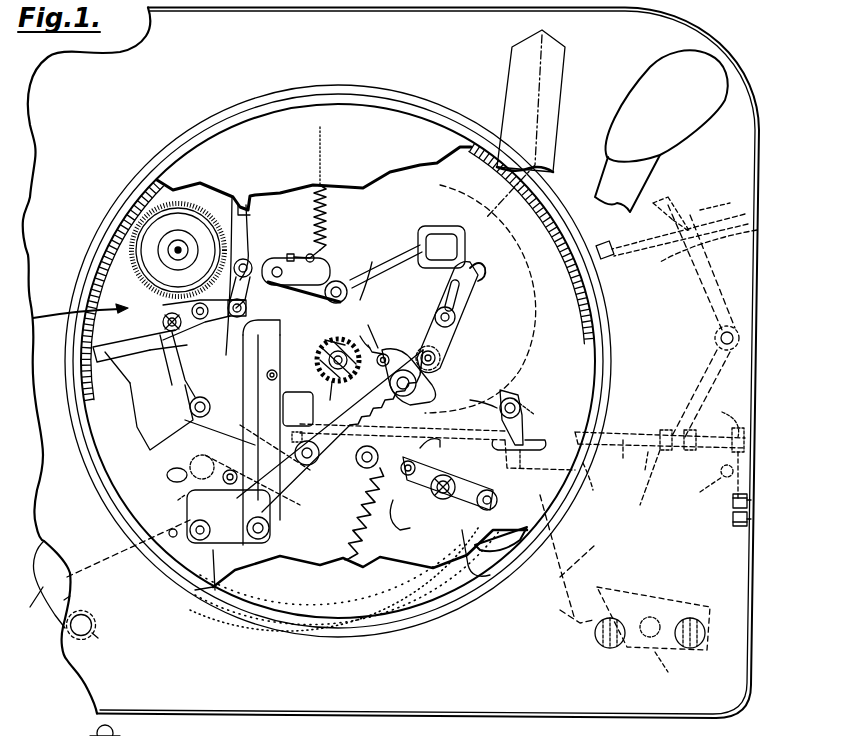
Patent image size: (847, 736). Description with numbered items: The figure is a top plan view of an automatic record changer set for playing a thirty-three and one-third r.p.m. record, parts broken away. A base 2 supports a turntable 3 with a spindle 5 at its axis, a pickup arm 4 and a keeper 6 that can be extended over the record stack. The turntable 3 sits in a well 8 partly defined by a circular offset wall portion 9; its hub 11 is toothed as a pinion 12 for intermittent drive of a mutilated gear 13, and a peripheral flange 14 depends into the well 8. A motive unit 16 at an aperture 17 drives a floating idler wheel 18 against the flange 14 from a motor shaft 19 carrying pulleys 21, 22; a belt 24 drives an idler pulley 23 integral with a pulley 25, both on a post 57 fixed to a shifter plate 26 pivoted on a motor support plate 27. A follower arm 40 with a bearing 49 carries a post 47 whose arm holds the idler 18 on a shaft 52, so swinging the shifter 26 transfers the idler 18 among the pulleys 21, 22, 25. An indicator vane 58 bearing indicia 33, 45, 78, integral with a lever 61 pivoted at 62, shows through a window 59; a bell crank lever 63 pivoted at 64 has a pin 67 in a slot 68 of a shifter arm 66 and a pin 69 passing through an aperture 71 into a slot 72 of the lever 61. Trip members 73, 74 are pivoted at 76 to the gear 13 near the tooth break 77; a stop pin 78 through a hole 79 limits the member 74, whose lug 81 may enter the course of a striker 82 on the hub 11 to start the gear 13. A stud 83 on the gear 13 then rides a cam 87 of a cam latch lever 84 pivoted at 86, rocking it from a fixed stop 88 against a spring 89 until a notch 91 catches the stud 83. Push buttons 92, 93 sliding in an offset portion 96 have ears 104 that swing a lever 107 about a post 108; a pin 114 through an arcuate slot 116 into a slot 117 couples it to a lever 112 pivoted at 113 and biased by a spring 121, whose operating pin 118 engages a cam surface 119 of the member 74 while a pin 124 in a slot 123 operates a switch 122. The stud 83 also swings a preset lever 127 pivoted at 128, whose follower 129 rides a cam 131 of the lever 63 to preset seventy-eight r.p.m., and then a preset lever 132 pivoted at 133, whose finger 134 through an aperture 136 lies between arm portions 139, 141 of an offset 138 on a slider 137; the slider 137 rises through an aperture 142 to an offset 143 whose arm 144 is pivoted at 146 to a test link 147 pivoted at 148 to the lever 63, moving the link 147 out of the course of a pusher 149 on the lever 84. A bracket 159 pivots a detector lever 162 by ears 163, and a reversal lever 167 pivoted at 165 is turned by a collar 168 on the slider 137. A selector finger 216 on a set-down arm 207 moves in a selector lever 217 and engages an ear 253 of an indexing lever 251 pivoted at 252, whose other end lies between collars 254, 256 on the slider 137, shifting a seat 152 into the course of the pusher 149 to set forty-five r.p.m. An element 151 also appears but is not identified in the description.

The base 2 is at (488, 703).
The turntable 3 is at (395, 135).
The pickup arm 4 is at (633, 197).
The spindle 5 is at (370, 346).
The keeper 6 is at (565, 73).
The well 8 is at (358, 100).
The circular offset wall portion 9 is at (398, 105).
The hub 11 is at (332, 385).
The pinion 12 is at (320, 360).
The mutilated gear 13 is at (522, 346).
The depending peripheral flange 14 is at (98, 250).
The motive unit 16 is at (69, 313).
The aperture 17 is at (245, 200).
The floating idler wheel 18 is at (148, 235).
The motor shaft 19 is at (160, 326).
The pulley 21 is at (187, 350).
The pulley 22 is at (165, 316).
The idler pulley 23 is at (205, 320).
The endless belt 24 is at (193, 340).
The pulley 25 is at (250, 305).
The shifter plate 26 is at (115, 285).
The motor support plate 27 is at (140, 408).
The speed indicium 33 is at (81, 625).
The follower arm 40 is at (325, 290).
The speed indicium 45 is at (60, 598).
The vertical post 47 is at (252, 210).
The bearing 49 is at (250, 272).
The vertical shaft 52 is at (178, 248).
The post 57 is at (238, 318).
The indicator vane 58 is at (27, 610).
The aperture 59 is at (95, 635).
The lever 61 is at (133, 572).
The pivot 62 is at (168, 533).
The bell crank lever 63 is at (213, 560).
The pivot 64 is at (200, 588).
The arm 66 is at (150, 420).
The pin 67 is at (185, 433).
The slot 68 is at (190, 410).
The pin 69 is at (192, 464).
The clearance aperture 71 is at (168, 480).
The slot 72 is at (178, 500).
The trip member 73 is at (456, 340).
The trip member 74 is at (433, 388).
The pivot 76 is at (438, 362).
The notch 77 is at (378, 340).
The stop pin 78 is at (380, 340).
The hole 79 is at (390, 362).
The upturned lug 81 is at (380, 392).
The striker 82 is at (330, 340).
The stud 83 is at (372, 260).
The cam latch lever 84 is at (405, 245).
The pivot 86 is at (320, 262).
The cam 87 is at (484, 274).
The fixed stop 88 is at (300, 256).
The spring 89 is at (320, 225).
The notch 91 is at (418, 238).
The push button 92 is at (690, 618).
The push button 93 is at (608, 650).
The offset central portion 96 is at (660, 598).
The lateral ears 104 is at (645, 612).
The lever 107 is at (595, 550).
The shouldered post 108 is at (674, 671).
The lever 112 is at (394, 521).
The pivot 113 is at (448, 493).
The pin 114 is at (498, 500).
The arcuate clearance slot 116 is at (470, 567).
The slot 117 is at (500, 580).
The operating pin 118 is at (354, 513).
The cam surface 119 is at (330, 431).
The tension spring 121 is at (365, 565).
The switch 122 is at (133, 729).
The slot 123 is at (441, 449).
The switch operating pin 124 is at (440, 497).
The preset lever 127 is at (316, 462).
The pivot 128 is at (363, 470).
The follower 129 is at (245, 541).
The cam 131 is at (265, 520).
The preset lever 132 is at (535, 416).
The pivot 133 is at (522, 400).
The finger 134 is at (460, 402).
The clearance aperture 136 is at (528, 444).
The slider 137 is at (622, 461).
The offset 138 is at (522, 455).
The arm portion 139 is at (512, 458).
The arm portion 141 is at (604, 484).
The clearance aperture 142 is at (297, 439).
The second offset 143 is at (298, 409).
The lateral arm 144 is at (258, 440).
The pivot 146 is at (278, 377).
The test link 147 is at (272, 545).
The pivot 148 is at (345, 560).
The pusher 149 is at (320, 262).
The shaft 151 is at (330, 345).
The seat 152 is at (261, 327).
The bracket 159 is at (750, 500).
The detector lever 162 is at (738, 505).
The ears 163 is at (738, 520).
The pivot 165 is at (700, 476).
The reversal lever 167 is at (663, 486).
The collar 168 is at (729, 427).
The set-down arm 207 is at (707, 207).
The selector finger 216 is at (696, 208).
The selector lever 217 is at (624, 258).
The indexing lever 251 is at (757, 255).
The pivot 252 is at (733, 338).
The vertical ear 253 is at (757, 230).
The collar 254 is at (641, 485).
The collar 256 is at (660, 457).